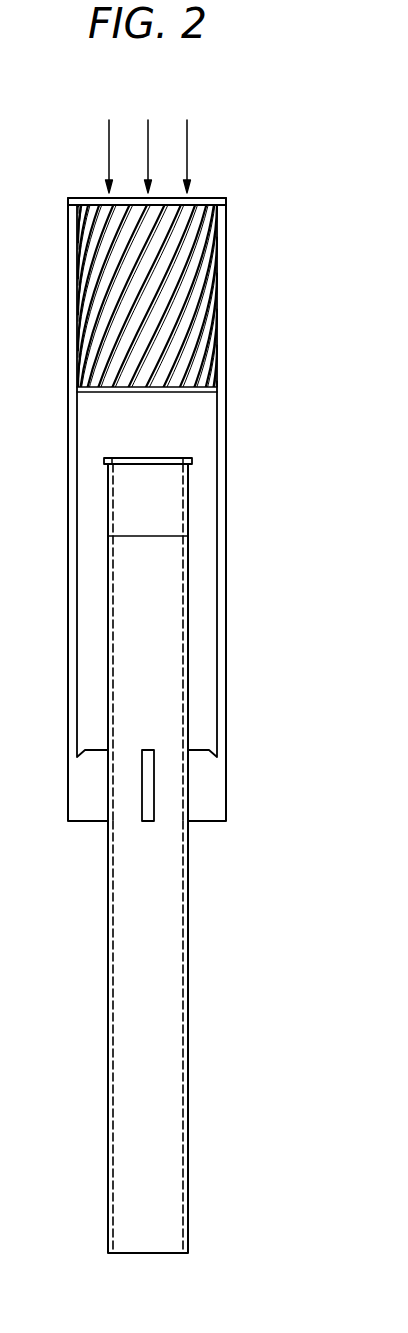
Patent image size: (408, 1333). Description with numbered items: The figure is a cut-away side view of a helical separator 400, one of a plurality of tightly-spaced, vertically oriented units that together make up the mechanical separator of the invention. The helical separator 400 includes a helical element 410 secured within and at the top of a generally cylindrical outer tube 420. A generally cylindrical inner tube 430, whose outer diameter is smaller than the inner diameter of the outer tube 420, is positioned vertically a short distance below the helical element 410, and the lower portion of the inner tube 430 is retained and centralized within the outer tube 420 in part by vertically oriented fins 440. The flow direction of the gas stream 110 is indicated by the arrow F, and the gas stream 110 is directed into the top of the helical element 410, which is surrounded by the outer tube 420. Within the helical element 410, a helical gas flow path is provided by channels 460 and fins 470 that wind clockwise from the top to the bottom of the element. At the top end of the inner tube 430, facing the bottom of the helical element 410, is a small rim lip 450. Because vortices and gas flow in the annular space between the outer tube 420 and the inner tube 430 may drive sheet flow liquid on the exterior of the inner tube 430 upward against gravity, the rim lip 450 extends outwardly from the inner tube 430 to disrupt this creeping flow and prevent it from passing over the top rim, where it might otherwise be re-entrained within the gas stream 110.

The gas stream 110 is at (148, 130).
The helical separator 400 is at (253, 732).
The helical element 410 is at (226, 256).
The outer tube 420 is at (226, 620).
The inner tube 430 is at (188, 1047).
The fins 440 is at (207, 823).
The rim lip 450 is at (192, 462).
The channels 460 is at (213, 363).
The fins 470 is at (213, 326).